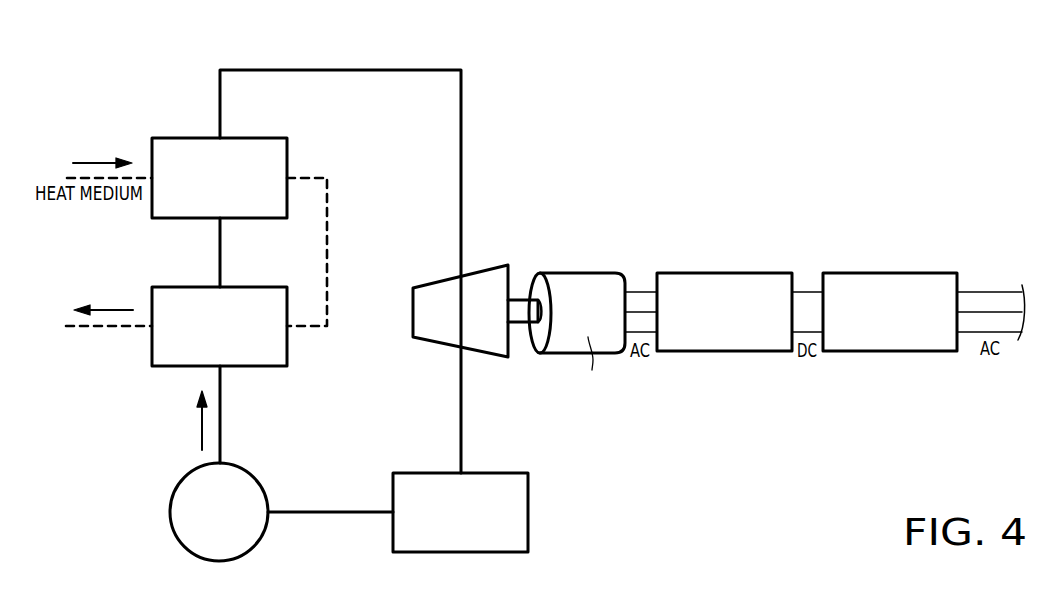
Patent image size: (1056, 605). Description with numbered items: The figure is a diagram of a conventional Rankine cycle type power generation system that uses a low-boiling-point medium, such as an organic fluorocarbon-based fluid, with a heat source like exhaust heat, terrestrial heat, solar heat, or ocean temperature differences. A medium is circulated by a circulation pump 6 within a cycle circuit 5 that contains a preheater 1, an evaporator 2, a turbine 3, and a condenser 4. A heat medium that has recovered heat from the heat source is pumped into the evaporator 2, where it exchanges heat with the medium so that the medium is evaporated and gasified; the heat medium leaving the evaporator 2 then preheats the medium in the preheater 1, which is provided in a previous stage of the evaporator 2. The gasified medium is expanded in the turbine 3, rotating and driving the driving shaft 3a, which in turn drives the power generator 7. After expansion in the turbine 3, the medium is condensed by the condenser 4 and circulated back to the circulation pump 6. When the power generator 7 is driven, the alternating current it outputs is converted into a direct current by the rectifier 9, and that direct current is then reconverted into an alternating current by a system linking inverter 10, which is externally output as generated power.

The preheater 1 is at (287, 352).
The evaporator 2 is at (287, 150).
The turbine 3 is at (487, 268).
The driving shaft 3a is at (518, 320).
The condenser 4 is at (505, 473).
The cycle circuit 5 is at (423, 70).
The circulation pump 6 is at (257, 479).
The power generator 7 is at (573, 272).
The rectifier 9 is at (723, 273).
The system linking inverter 10 is at (900, 273).